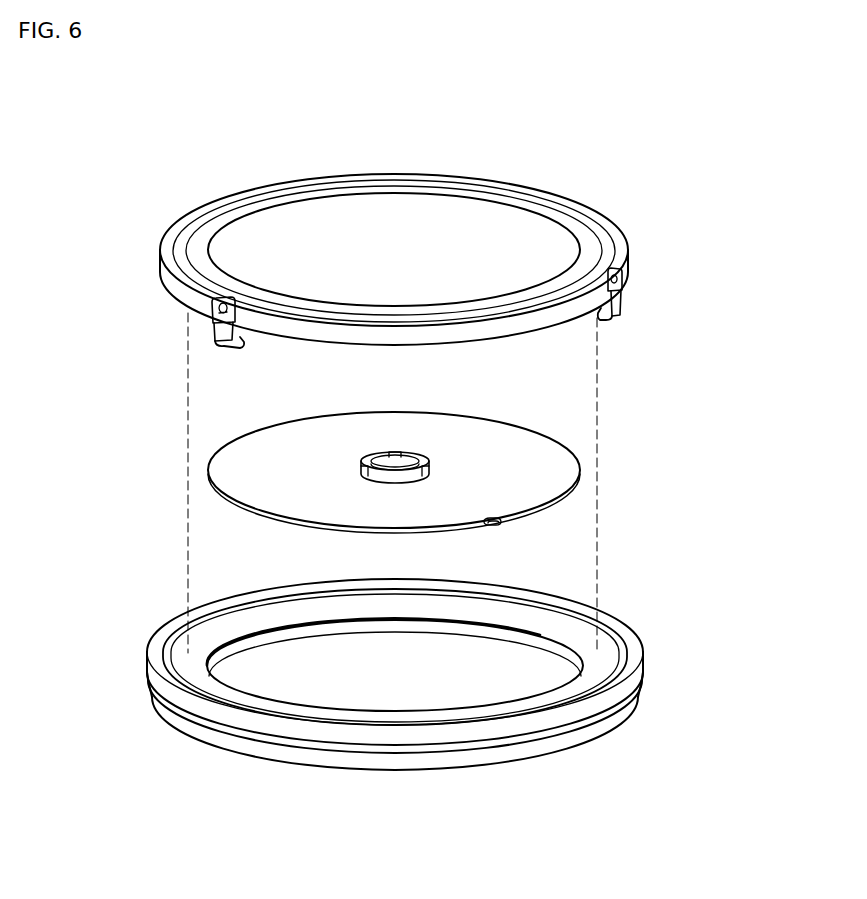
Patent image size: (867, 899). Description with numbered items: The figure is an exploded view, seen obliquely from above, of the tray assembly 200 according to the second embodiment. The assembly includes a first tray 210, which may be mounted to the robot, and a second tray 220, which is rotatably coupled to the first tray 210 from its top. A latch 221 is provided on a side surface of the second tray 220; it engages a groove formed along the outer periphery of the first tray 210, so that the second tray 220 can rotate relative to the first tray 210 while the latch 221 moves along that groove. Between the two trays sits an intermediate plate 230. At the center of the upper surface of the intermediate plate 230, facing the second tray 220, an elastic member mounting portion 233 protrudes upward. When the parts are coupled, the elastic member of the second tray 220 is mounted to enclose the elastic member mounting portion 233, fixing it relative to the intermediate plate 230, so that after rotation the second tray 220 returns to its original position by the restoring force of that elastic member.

The tray assembly 200 is at (136, 122).
The second tray 220 is at (627, 236).
The latch 221 is at (622, 297).
The intermediate plate 230 is at (582, 464).
The elastic member mounting portion 233 is at (410, 453).
The first tray 210 is at (606, 624).